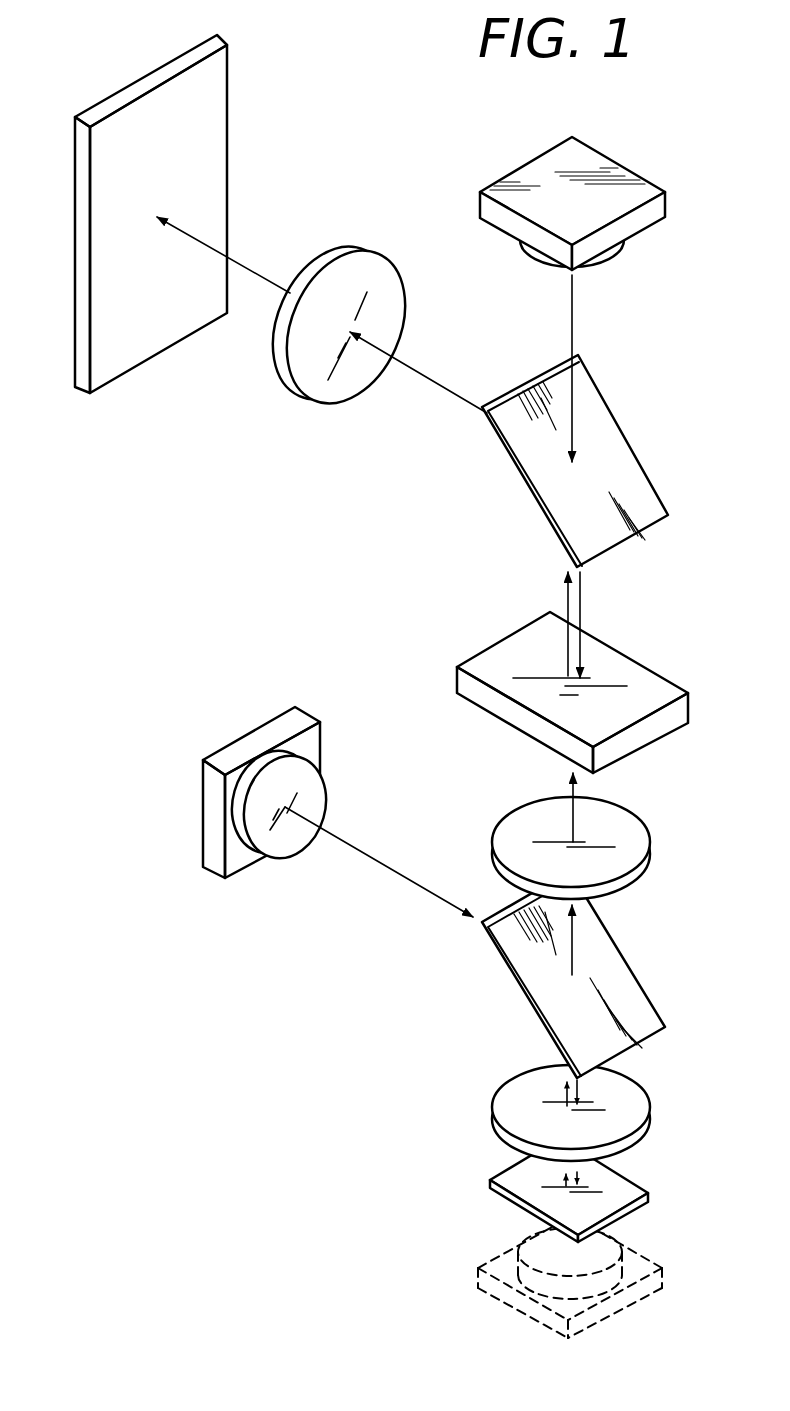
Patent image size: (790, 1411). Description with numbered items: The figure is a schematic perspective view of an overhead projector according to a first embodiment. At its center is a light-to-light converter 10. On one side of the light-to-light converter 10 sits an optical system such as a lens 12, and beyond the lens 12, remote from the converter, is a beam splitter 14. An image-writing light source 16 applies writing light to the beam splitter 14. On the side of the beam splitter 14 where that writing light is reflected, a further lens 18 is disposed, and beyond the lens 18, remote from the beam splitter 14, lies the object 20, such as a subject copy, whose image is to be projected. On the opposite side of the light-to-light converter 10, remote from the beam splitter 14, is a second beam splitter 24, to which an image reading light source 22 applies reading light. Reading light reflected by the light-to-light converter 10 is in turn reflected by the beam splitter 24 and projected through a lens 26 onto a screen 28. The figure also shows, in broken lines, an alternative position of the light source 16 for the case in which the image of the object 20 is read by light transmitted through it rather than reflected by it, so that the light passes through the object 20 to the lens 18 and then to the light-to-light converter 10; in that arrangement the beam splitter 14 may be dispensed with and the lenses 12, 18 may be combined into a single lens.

The light-to-light converter 10 is at (648, 682).
The optical system (lens) 12 is at (632, 827).
The beam splitter 14 is at (627, 973).
The image-writing light source 16 is at (260, 740).
The optical system (lens) 18 is at (637, 1102).
The object (subject copy) 20 is at (623, 1192).
The image reading light source 22 is at (642, 220).
The beam splitter 24 is at (613, 423).
The optical system (lens) 26 is at (383, 268).
The screen 28 is at (217, 102).